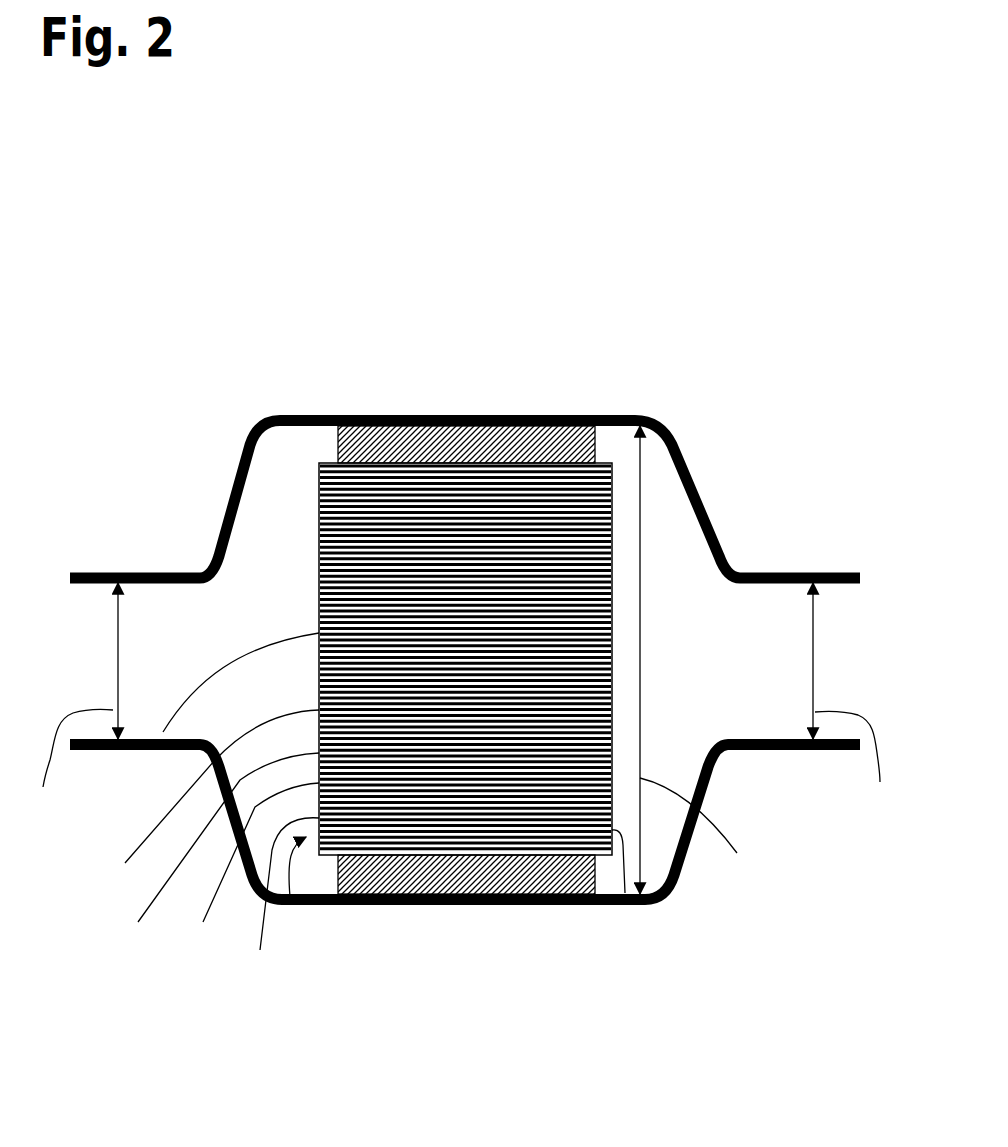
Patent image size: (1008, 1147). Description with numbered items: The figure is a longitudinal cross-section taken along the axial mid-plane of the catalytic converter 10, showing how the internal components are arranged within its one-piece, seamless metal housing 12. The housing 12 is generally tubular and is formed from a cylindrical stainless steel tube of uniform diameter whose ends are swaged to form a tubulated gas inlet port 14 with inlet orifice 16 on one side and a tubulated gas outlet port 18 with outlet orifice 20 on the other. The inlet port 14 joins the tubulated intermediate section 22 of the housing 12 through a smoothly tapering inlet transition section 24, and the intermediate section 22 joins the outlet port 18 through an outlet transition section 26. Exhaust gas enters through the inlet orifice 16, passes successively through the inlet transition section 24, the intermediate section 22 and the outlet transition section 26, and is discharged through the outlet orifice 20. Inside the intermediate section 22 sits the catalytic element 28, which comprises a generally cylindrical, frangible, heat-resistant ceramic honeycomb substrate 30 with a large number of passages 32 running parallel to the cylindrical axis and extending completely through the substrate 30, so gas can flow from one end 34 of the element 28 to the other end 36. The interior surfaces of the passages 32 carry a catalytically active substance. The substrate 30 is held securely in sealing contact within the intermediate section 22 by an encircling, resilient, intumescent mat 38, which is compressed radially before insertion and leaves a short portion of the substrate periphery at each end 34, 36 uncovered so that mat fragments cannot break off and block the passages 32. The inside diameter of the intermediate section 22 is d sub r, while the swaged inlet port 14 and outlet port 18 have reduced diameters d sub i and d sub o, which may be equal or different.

The catalytic converter 10 is at (237, 275).
The housing 12 is at (308, 412).
The gas inlet port 14 is at (156, 570).
The inlet orifice 16 is at (78, 653).
The gas outlet port 18 is at (757, 572).
The outlet orifice 20 is at (880, 665).
The intermediate section 22 is at (410, 413).
The inlet transition section 24 is at (228, 499).
The outlet transition section 26 is at (698, 489).
The catalytic element 28 is at (297, 903).
The ceramic honeycomb substrate 30 is at (200, 795).
The passages 32 is at (212, 867).
The one end of catalytic element 34 is at (163, 732).
The other end of catalytic element 36 is at (625, 893).
The mat 38 is at (597, 433).